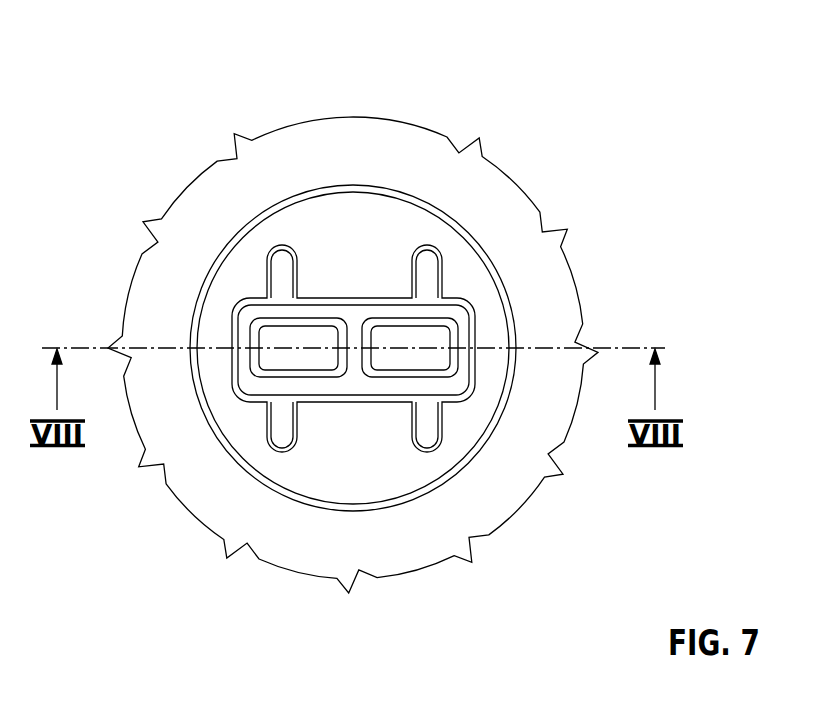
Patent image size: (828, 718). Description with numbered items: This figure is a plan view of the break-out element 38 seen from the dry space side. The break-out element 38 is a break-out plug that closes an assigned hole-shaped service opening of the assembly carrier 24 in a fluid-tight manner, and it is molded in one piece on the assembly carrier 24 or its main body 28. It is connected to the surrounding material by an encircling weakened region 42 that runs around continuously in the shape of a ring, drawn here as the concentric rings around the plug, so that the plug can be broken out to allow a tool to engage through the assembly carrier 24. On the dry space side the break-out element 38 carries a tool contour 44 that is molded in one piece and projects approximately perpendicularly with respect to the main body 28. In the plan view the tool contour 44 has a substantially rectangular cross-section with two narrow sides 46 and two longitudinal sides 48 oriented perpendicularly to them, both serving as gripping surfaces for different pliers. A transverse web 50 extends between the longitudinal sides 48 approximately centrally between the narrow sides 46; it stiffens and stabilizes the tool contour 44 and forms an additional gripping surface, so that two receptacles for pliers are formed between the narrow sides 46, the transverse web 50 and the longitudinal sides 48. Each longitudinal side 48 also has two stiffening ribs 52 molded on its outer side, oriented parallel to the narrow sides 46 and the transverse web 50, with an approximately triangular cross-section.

The assembly carrier 24 is at (406, 355).
The main body 28 is at (545, 272).
The break-out element 38 is at (338, 480).
The weakened region 42 is at (485, 440).
The tool contour 44 is at (380, 279).
The narrow sides 46 is at (233, 338).
The longitudinal sides 48 is at (333, 300).
The transverse web 50 is at (357, 357).
The stiffening ribs 52 is at (282, 263).